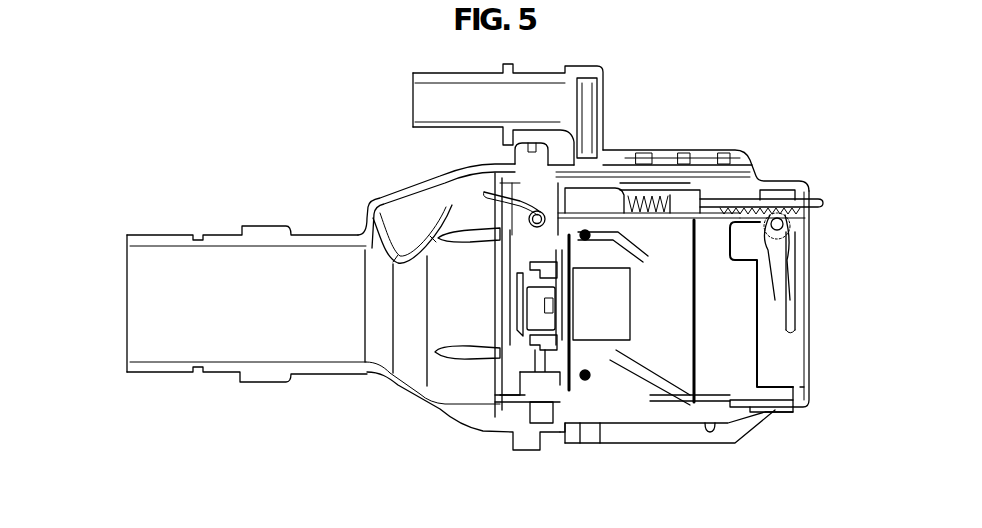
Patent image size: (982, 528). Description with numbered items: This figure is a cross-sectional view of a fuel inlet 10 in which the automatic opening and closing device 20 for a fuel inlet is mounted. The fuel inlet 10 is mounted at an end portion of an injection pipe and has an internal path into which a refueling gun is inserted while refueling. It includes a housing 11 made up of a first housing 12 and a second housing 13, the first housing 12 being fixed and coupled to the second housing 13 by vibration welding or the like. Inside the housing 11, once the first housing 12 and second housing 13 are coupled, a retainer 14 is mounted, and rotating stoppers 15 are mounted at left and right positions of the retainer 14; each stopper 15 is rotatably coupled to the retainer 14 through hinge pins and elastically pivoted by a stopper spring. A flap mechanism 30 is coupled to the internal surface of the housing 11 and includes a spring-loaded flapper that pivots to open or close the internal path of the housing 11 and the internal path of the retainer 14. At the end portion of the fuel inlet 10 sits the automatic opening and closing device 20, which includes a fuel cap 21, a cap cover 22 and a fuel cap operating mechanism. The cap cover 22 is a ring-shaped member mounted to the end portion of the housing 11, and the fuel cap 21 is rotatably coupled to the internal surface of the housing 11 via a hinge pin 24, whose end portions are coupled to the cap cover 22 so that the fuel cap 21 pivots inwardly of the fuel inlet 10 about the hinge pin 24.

The fuel inlet 10 is at (416, 424).
The housing 11 is at (563, 168).
The first housing 12 is at (383, 196).
The second housing 13 is at (626, 175).
The retainer 14 is at (672, 362).
The stopper 15 is at (606, 323).
The automatic opening and closing device 20 is at (784, 413).
The fuel cap 21 is at (797, 312).
The cap cover 22 is at (806, 407).
The hinge pin 24 is at (795, 232).
The flap mechanism 30 is at (522, 372).